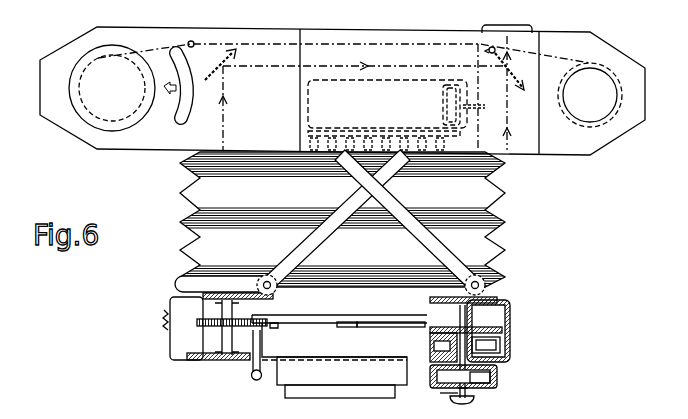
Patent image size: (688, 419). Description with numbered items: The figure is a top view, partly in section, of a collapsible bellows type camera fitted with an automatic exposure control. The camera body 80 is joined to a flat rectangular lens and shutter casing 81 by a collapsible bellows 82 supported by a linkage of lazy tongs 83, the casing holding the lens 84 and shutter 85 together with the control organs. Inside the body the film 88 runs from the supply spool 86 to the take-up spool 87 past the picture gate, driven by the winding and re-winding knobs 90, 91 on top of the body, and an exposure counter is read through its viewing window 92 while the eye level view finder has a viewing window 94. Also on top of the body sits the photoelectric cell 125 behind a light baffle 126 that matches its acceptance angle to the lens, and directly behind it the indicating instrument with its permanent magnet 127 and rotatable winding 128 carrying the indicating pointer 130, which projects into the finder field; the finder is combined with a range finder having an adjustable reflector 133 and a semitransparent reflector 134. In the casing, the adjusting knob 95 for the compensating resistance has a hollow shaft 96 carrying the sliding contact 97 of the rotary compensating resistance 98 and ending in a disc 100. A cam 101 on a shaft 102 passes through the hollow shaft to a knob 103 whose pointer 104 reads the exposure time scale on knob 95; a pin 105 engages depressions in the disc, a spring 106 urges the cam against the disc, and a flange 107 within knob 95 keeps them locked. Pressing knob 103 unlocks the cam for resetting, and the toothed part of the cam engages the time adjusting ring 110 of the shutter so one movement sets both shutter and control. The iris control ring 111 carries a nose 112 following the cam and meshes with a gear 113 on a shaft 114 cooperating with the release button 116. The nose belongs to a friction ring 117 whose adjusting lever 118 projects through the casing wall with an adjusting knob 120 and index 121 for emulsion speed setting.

The camera body 80 is at (566, 156).
The lens and shutter casing 81 is at (510, 317).
The collapsible bellows 82 is at (504, 226).
The lazy tongs 83 is at (355, 206).
The lens 84 is at (355, 392).
The shutter 85 is at (265, 345).
The supply spool 86 is at (81, 118).
The take-up spool 87 is at (608, 117).
The film 88 is at (392, 42).
The winding knob 90 is at (87, 52).
The re-winding knob 91 is at (612, 79).
The viewing window of exposure counter 92 is at (187, 112).
The viewing window 94 is at (534, 30).
The adjusting knob 95 is at (496, 395).
The hollow shaft 96 is at (493, 343).
The sliding contact 97 is at (441, 353).
The rotary compensating resistance 98 is at (501, 350).
The disc 100 is at (503, 330).
The cam 101 is at (490, 322).
The shaft 102 is at (500, 375).
The knob 103 is at (463, 404).
The pointer 104 is at (447, 396).
The pin 105 is at (480, 325).
The spring 106 is at (500, 388).
The flange 107 is at (480, 391).
The time adjusting ring 110 is at (378, 318).
The iris control ring 111 is at (384, 329).
The nose 112 is at (343, 329).
The gear 113 is at (178, 300).
The shaft 114 is at (222, 333).
The button 116 is at (164, 322).
The friction ring 117 is at (279, 326).
The adjusting lever 118 is at (232, 353).
The adjusting knob 120 is at (259, 380).
The index 121 is at (250, 365).
The photoelectric cell 125 is at (350, 138).
The light baffle 126 is at (306, 142).
The permanent magnet 127 is at (366, 81).
The rotatable winding 128 is at (447, 98).
The indicating pointer 130 is at (484, 107).
The adjustable reflector 133 is at (222, 62).
The semitransparent reflector 134 is at (488, 49).